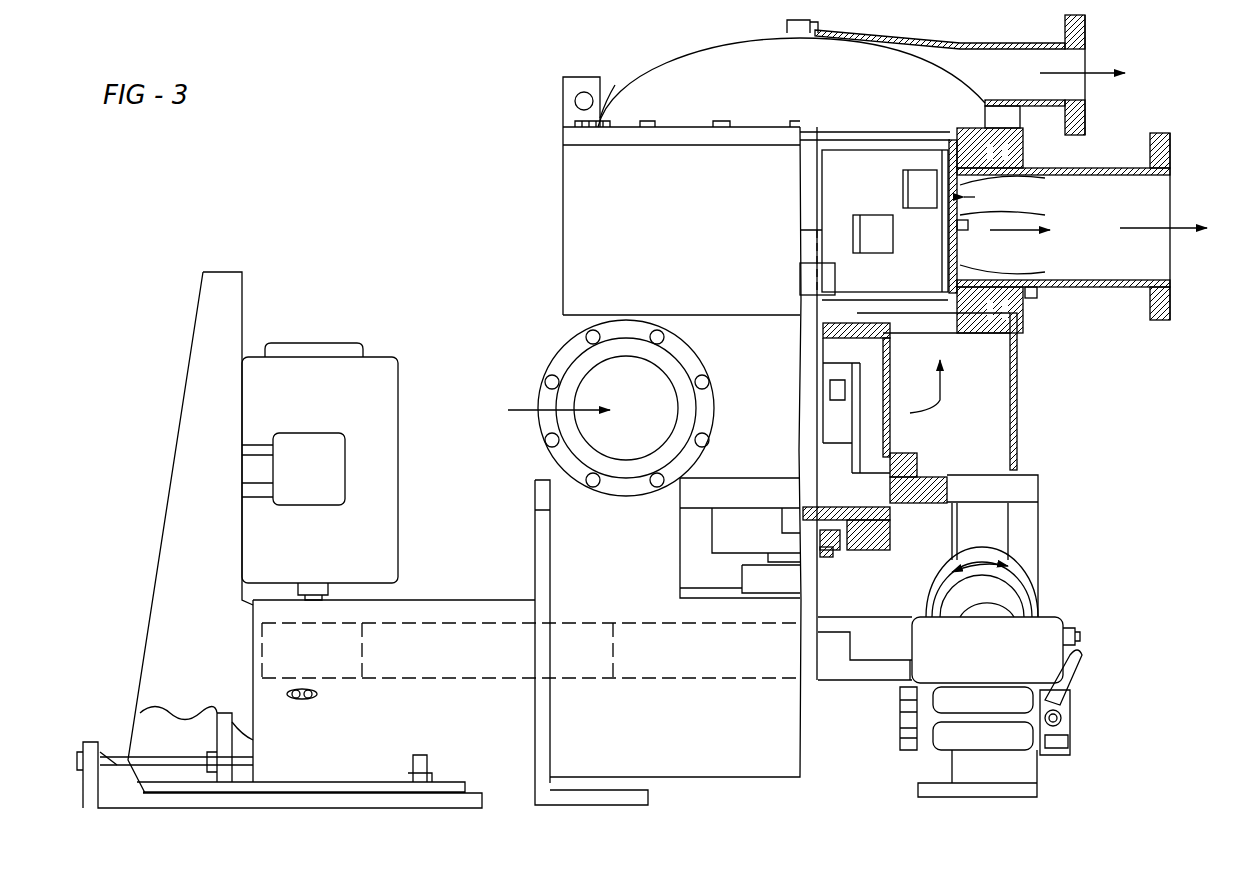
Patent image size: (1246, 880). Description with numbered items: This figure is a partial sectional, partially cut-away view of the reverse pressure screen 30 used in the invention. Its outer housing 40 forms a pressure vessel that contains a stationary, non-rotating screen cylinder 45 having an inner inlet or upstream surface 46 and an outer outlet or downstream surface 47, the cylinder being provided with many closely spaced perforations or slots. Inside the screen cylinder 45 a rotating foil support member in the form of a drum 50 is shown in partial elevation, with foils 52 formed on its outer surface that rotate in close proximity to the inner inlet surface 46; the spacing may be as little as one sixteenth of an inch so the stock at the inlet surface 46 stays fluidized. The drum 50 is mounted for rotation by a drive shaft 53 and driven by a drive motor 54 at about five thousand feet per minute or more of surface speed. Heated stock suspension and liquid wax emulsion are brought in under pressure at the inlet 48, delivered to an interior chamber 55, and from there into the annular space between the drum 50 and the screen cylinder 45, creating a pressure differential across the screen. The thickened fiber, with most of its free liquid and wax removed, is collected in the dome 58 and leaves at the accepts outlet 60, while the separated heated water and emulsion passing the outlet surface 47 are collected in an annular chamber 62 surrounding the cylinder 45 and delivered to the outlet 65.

The reverse pressure screen 30 is at (646, 60).
The outer housing 40 is at (580, 265).
The screen cylinder 45 is at (975, 197).
The inner inlet surface 46 is at (960, 247).
The outer outlet surface 47 is at (960, 208).
The inlet 48 is at (560, 368).
The rotating drum 50 is at (862, 160).
The foils 52 is at (913, 200).
The drive shaft 53 is at (800, 455).
The drive motor 54 is at (385, 488).
The interior chamber 55 is at (995, 423).
The dome 58 is at (816, 92).
The accepts outlet 60 is at (1078, 63).
The annular chamber 62 is at (1008, 280).
The outlet 65 is at (1165, 268).